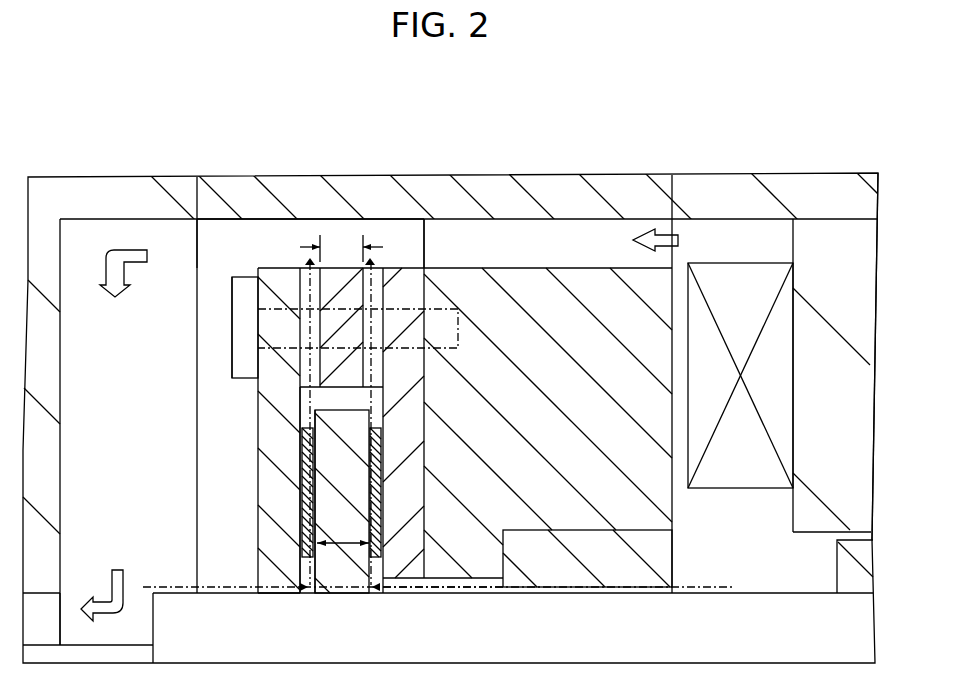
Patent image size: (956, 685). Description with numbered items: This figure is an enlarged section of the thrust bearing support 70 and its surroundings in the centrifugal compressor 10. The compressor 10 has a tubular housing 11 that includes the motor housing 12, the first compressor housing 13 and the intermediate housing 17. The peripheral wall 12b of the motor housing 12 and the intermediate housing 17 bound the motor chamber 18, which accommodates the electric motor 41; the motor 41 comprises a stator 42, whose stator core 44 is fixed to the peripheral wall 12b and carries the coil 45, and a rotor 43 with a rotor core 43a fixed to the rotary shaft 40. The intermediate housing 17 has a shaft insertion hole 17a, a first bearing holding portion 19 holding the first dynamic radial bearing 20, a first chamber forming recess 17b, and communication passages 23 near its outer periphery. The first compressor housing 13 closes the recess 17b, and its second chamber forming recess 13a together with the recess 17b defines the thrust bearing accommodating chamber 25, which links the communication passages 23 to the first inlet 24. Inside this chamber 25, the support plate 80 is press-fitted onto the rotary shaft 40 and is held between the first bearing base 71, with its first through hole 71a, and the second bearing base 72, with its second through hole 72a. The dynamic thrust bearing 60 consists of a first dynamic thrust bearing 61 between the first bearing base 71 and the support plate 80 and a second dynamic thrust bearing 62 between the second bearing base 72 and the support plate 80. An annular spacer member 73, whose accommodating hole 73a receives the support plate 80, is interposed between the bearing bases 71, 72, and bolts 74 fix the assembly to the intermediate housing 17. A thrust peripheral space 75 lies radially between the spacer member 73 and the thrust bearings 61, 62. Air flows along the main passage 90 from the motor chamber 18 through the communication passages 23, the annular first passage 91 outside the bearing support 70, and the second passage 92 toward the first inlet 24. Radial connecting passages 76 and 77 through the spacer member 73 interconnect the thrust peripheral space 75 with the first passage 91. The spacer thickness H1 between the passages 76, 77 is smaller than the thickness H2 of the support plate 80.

The centrifugal compressor 10 is at (222, 135).
The housing 11 is at (84, 217).
The motor housing 12 is at (788, 185).
The peripheral wall 12b is at (728, 187).
The first compressor housing 13 is at (88, 181).
The second chamber forming recess 13a is at (168, 233).
The intermediate housing 17 is at (620, 187).
The shaft insertion hole 17a is at (470, 588).
The first chamber forming recess 17b is at (388, 226).
The motor chamber 18 is at (744, 556).
The first bearing holding portion 19 is at (606, 534).
The first dynamic radial bearing 20 is at (578, 587).
The communication passages 23 is at (513, 232).
The first inlet 24 is at (30, 620).
The thrust bearing accommodating chamber 25 is at (133, 233).
The rotary shaft 40 is at (163, 597).
The electric motor 41 is at (827, 213).
The stator 42 is at (848, 245).
The rotor 43 is at (857, 574).
The rotor core 43a is at (838, 582).
The stator core 44 is at (823, 490).
The coil 45 is at (740, 283).
The dynamic thrust bearing 60 is at (296, 461).
The first dynamic thrust bearing 61 is at (392, 458).
The second dynamic thrust bearing 62 is at (312, 528).
The thrust bearing support 70 is at (252, 267).
The first bearing base 71 is at (428, 290).
The first through hole 71a is at (398, 590).
The second bearing base 72 is at (268, 365).
The second through hole 72a is at (276, 590).
The spacer member 73 is at (232, 280).
The accommodating hole 73a is at (364, 398).
The bolts 74 is at (242, 300).
The thrust peripheral space 75 is at (427, 413).
The connecting passages 76 is at (460, 332).
The connecting passages 77 is at (306, 330).
The support plate 80 is at (327, 505).
The main passage 90 is at (83, 232).
The first passage 91 is at (273, 233).
The second passage 92 is at (123, 460).
The thickness H1 is at (340, 247).
The thickness H2 is at (356, 548).